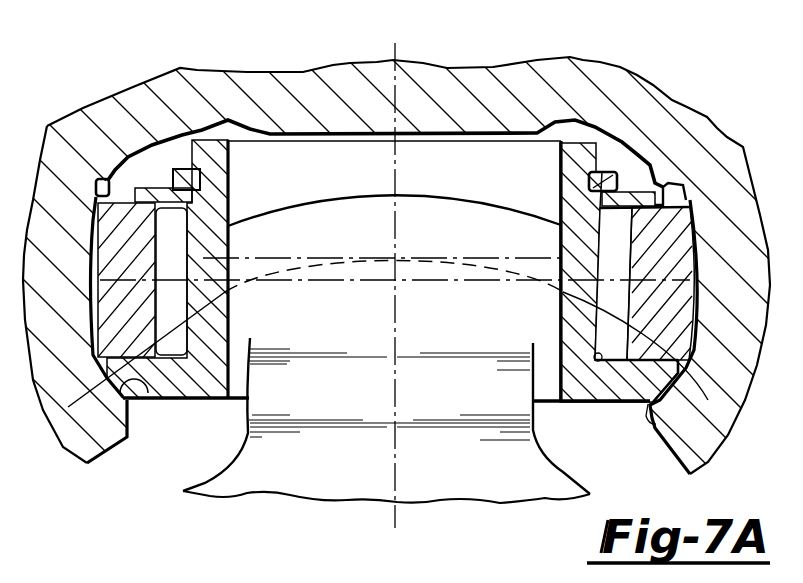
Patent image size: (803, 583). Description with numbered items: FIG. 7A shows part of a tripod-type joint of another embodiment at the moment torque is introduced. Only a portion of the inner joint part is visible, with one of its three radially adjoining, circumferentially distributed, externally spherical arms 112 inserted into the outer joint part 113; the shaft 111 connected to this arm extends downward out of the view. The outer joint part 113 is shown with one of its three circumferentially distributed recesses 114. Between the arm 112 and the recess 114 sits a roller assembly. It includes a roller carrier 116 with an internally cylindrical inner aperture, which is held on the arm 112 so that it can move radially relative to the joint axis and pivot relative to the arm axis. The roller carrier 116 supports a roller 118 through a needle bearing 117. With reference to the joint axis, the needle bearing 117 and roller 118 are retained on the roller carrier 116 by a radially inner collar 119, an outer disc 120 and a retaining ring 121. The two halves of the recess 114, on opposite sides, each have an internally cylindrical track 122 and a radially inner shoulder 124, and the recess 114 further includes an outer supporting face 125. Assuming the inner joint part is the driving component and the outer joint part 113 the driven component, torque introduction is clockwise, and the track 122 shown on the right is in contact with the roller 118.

The shaft 111 is at (222, 473).
The externally spherical arm 112 is at (300, 323).
The outer joint part 113 is at (505, 93).
The recess 114 is at (163, 160).
The roller carrier 116 is at (580, 368).
The needle bearing 117 is at (612, 335).
The roller 118 is at (636, 350).
The radially inner collar 119 is at (650, 424).
The outer disc 120 is at (632, 196).
The retaining ring 121 is at (604, 172).
The internally cylindrical track 122 is at (100, 177).
The radially inner shoulder 124 is at (150, 400).
The outer supporting face 125 is at (363, 130).